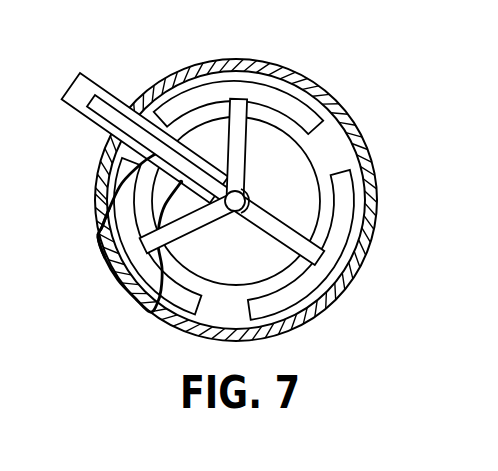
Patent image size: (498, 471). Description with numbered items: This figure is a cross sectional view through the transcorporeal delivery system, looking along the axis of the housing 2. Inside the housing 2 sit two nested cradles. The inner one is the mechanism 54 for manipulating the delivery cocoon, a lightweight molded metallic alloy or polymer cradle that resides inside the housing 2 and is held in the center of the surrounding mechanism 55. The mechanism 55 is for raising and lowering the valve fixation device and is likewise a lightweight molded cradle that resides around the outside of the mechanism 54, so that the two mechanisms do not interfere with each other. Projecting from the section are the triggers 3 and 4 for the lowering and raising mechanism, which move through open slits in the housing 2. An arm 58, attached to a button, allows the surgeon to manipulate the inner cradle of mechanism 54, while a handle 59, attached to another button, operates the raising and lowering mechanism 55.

The housing 2 is at (366, 254).
The trigger 3 is at (70, 82).
The trigger 4 is at (97, 115).
The mechanism for manipulating the delivery cocoon 54 is at (312, 157).
The mechanism for raising and lowering the valve fixation device 55 is at (302, 97).
The arm 58 is at (150, 312).
The handle 59 is at (98, 233).